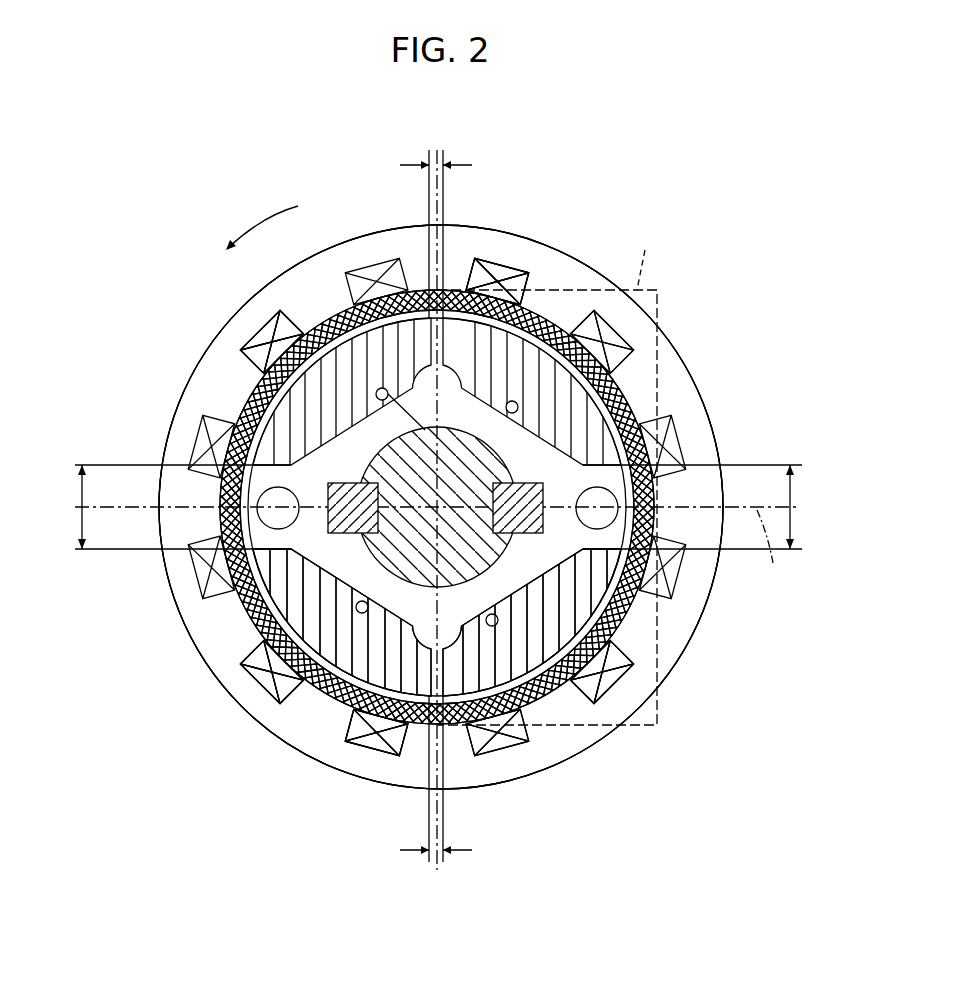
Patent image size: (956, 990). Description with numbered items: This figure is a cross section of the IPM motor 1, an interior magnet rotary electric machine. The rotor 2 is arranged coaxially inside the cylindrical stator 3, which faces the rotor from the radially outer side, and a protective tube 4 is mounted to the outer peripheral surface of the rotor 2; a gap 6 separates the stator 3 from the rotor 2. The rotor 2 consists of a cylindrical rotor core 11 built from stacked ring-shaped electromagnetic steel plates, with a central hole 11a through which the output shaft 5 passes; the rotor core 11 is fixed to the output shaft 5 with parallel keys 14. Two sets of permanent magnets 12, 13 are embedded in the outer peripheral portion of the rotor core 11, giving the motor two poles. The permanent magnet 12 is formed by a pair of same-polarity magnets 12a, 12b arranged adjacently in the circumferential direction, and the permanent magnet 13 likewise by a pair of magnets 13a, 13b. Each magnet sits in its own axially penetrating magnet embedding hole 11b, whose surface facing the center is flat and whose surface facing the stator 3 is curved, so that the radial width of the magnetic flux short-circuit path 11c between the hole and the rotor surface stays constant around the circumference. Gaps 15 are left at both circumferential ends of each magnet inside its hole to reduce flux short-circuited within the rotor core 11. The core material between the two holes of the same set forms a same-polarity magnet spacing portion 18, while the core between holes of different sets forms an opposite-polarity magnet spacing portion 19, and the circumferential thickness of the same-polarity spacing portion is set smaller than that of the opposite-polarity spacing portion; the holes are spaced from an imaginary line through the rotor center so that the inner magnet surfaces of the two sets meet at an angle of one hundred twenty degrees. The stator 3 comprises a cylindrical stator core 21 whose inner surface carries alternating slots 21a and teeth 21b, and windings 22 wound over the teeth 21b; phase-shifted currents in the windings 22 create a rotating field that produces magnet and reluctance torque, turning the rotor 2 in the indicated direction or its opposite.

The IPM motor 1 is at (706, 238).
The rotor 2 is at (277, 570).
The stator 3 is at (708, 412).
The protective tube 4 is at (630, 400).
The output shaft 5 is at (485, 595).
The gap 6 is at (258, 643).
The rotor core 11 is at (598, 692).
The hole 11a is at (400, 475).
The magnet embedding hole 11b is at (425, 522).
The magnetic flux short-circuit path 11c is at (612, 333).
The permanent magnet 12 is at (384, 315).
The magnet 12a is at (258, 328).
The magnet 12b is at (540, 300).
The permanent magnet 13 is at (436, 672).
The magnet 13a is at (600, 700).
The magnet 13b is at (266, 705).
The parallel key 14 is at (262, 525).
The gap 15 is at (395, 285).
The same-polarity magnet spacing portion 18 is at (427, 290).
The opposite-polarity magnet spacing portion 19 is at (216, 490).
The stator core 21 is at (690, 600).
The slot 21a is at (370, 754).
The tooth 21b is at (317, 712).
The winding 22 is at (390, 748).